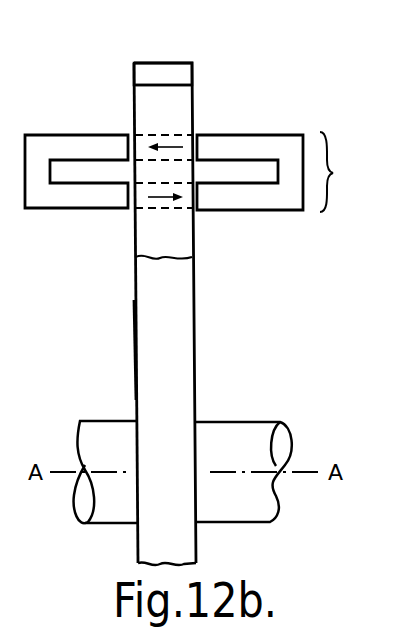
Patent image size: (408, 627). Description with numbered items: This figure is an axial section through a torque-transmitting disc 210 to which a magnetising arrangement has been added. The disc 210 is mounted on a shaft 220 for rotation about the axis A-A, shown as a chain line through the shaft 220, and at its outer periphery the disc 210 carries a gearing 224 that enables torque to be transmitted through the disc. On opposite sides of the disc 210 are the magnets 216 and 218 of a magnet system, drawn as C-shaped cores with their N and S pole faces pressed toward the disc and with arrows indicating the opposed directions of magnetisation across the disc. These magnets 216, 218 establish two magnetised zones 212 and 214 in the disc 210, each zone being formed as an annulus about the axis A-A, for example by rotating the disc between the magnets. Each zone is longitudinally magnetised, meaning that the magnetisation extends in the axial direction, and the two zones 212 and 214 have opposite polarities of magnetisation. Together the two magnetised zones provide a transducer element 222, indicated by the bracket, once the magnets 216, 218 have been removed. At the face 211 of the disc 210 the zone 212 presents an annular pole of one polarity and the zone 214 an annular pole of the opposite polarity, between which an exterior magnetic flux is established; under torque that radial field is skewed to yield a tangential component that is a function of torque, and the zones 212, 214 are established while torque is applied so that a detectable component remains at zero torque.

The disc 210 is at (186, 312).
The face 211 is at (137, 342).
The magnetised zone 212 is at (170, 140).
The magnetised zone 214 is at (188, 208).
The magnet 216 is at (80, 209).
The magnet 218 is at (290, 213).
The shaft 220 is at (230, 437).
The transducer element 222 is at (349, 172).
The gearing 224 is at (168, 68).